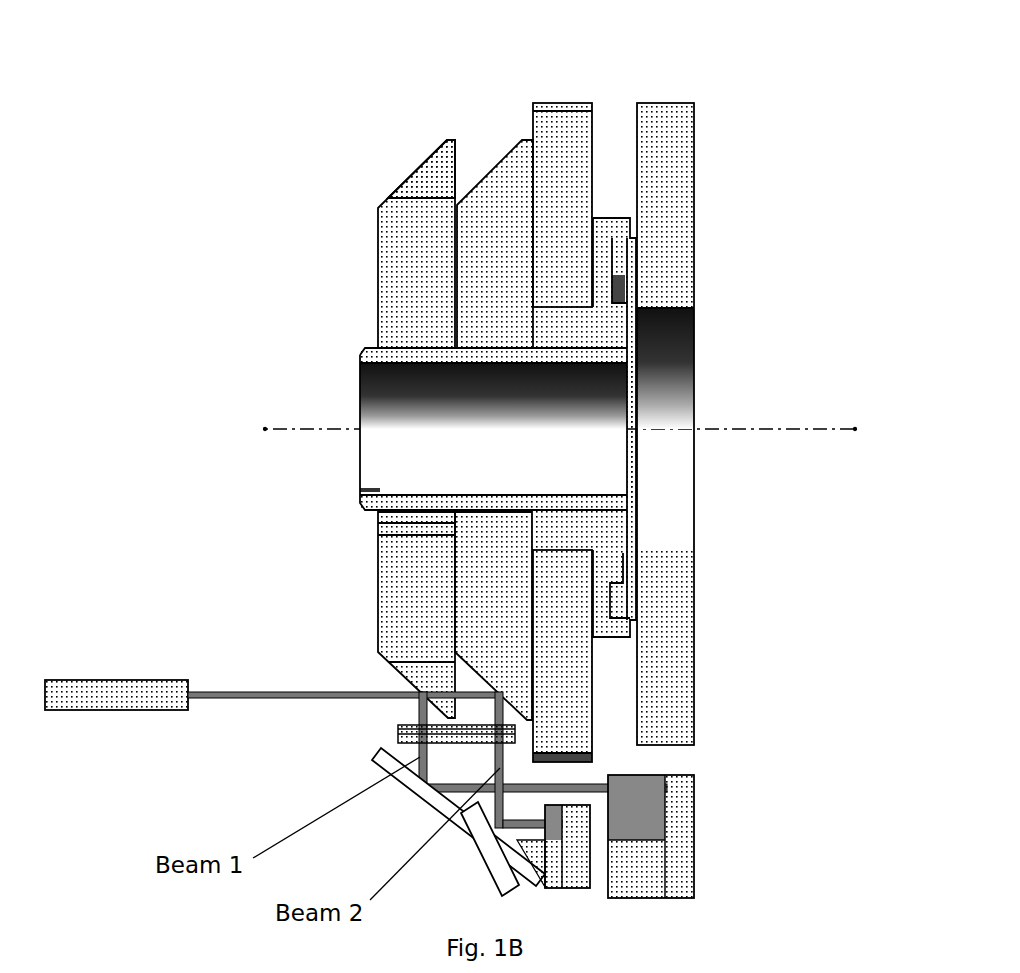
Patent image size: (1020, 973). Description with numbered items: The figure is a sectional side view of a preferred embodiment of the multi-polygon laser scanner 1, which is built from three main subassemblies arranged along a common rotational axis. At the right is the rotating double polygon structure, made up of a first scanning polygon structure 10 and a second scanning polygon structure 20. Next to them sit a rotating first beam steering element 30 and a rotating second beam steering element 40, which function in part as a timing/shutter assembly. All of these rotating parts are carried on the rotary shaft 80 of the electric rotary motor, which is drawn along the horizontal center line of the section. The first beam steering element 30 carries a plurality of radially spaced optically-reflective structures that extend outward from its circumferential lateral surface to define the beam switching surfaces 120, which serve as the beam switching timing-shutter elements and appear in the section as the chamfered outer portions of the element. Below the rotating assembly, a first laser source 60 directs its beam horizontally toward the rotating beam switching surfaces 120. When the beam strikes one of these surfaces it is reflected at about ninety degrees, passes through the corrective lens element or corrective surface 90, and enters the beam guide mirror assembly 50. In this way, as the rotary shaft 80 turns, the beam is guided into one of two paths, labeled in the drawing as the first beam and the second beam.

The multi-polygon laser scanner 1 is at (777, 147).
The first scanning polygon structure 10 is at (667, 268).
The second scanning polygon structure 20 is at (567, 133).
The first beam steering element 30 is at (375, 268).
The second beam steering element 40 is at (505, 152).
The beam guide mirror assembly 50 is at (373, 762).
The first laser source 60 is at (118, 688).
The rotary shaft 80 is at (327, 428).
The corrective lens element or corrective surface 90 is at (402, 740).
The beam switching surfaces 120 is at (418, 168).